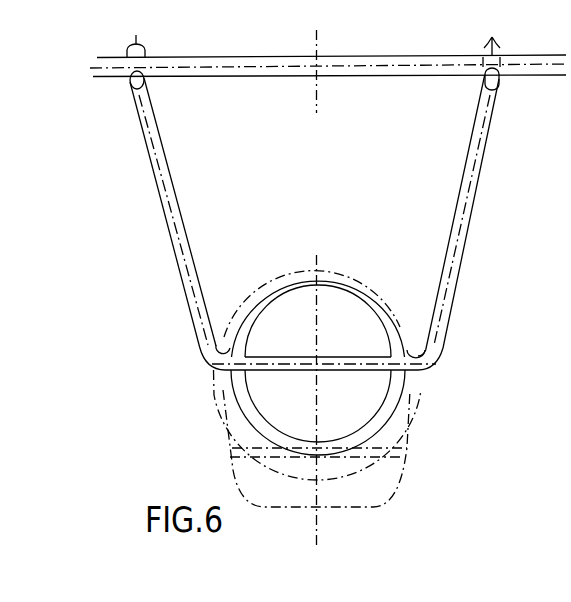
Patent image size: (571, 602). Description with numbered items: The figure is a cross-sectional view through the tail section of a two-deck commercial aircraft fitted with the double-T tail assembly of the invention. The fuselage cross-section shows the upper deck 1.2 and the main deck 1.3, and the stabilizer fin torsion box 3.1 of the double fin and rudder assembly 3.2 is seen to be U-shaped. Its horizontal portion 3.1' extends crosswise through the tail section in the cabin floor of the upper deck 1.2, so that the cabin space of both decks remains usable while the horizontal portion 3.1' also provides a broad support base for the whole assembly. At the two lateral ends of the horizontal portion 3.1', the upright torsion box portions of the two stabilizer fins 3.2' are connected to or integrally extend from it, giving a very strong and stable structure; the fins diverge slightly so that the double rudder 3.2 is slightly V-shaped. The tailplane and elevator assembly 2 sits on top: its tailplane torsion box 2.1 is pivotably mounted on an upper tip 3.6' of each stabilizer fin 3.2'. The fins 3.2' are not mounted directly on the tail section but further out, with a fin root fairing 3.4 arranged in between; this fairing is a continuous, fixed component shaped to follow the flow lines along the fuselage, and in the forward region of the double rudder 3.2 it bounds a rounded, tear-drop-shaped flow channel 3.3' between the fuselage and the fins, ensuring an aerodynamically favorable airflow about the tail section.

The tailplane and elevator assembly 2 is at (332, 73).
The tailplane torsion box 2.1 is at (228, 63).
The pivot bearing 3.6' is at (316, 79).
The stabilizer fin 3.2' is at (314, 215).
The double fin and rudder assembly 3.2 is at (266, 220).
The hook receptacle 3.3' is at (329, 290).
The stabilizer fin torsion box 3.1 is at (286, 342).
The fin root fairing 3.4 is at (217, 367).
The horizontal portion of the torsion box 3.1' is at (296, 404).
The main deck 1.3 is at (383, 447).
The upper deck 1.2 is at (289, 438).